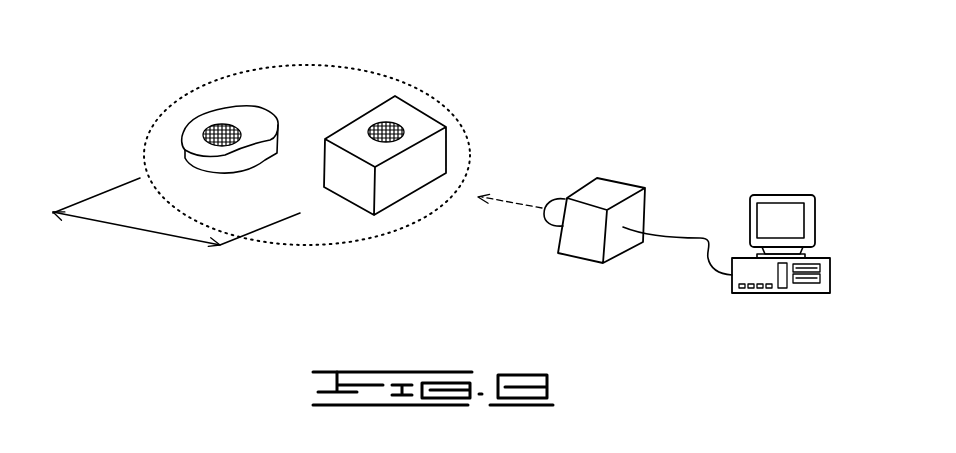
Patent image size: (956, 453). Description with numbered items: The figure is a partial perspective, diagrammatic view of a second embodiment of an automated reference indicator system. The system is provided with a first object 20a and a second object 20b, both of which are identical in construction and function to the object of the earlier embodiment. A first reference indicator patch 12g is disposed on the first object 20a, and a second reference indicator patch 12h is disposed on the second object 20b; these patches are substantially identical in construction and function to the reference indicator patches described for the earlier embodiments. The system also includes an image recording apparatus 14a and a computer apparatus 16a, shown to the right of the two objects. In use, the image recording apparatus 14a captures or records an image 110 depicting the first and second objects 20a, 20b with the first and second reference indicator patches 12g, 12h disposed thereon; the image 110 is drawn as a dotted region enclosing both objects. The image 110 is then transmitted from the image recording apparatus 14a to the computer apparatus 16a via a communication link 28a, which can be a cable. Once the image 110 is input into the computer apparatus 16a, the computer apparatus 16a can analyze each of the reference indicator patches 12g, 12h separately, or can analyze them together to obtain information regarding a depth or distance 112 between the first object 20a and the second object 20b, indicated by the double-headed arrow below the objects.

The image 110 is at (362, 68).
The first reference indicator patch 12g is at (225, 127).
The second reference indicator patch 12h is at (398, 123).
The first object 20a is at (180, 107).
The second object 20b is at (431, 139).
The depth or distance 112 is at (128, 227).
The image recording apparatus 14a is at (617, 182).
The computer apparatus 16a is at (778, 192).
The communication link 28a is at (683, 237).